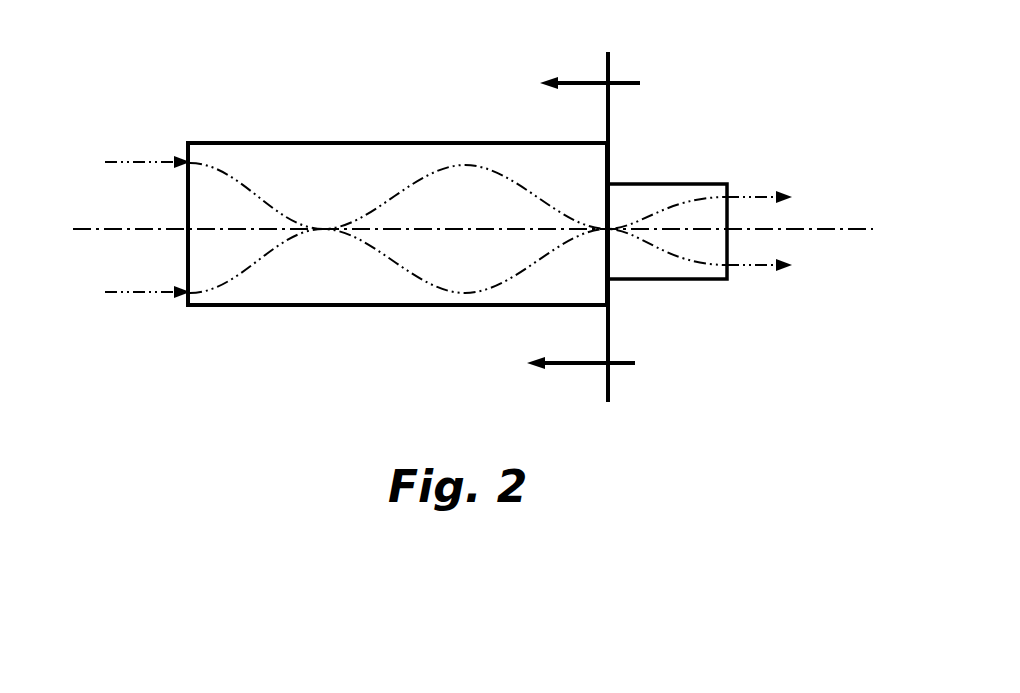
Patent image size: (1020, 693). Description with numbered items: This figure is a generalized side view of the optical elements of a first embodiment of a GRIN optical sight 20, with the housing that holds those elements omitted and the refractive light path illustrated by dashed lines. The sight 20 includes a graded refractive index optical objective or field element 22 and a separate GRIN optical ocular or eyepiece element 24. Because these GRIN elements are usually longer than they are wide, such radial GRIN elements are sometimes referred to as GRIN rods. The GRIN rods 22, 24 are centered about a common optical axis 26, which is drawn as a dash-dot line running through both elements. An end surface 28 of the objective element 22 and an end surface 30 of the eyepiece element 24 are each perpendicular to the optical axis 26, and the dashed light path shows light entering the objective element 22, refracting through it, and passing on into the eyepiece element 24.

The optical sight 20 is at (675, 68).
The GRIN optical objective or field element 22 is at (229, 142).
The GRIN optical ocular or eyepiece element 24 is at (707, 184).
The optical axis 26 is at (112, 226).
The end surface 28 is at (612, 157).
The end surface 30 is at (607, 282).